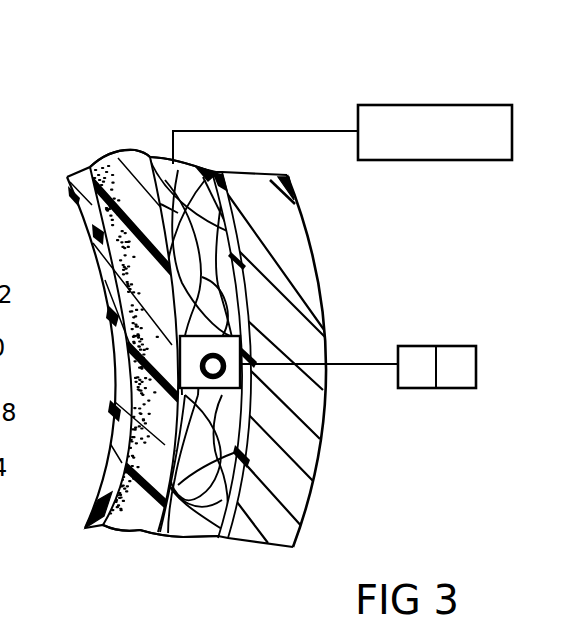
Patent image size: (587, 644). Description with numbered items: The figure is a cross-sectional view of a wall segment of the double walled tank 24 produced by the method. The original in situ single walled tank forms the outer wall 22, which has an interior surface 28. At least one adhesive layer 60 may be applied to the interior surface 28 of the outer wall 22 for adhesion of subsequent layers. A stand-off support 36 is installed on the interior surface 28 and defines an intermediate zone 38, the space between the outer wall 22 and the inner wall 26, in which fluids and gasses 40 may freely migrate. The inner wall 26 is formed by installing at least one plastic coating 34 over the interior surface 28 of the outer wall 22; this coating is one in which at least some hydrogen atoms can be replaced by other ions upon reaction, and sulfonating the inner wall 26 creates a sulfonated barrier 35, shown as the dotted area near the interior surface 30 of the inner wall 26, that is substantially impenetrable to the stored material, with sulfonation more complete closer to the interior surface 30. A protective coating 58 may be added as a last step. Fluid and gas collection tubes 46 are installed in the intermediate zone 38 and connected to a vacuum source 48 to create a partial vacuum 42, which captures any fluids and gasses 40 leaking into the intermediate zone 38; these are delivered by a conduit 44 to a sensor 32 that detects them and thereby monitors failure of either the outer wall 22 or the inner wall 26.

The outer wall 22 is at (288, 530).
The double walled tank 24 is at (412, 432).
The inner wall 26 is at (113, 168).
The interior surface of outer wall 28 is at (252, 398).
The interior surface of inner wall 30 is at (80, 202).
The sensor 32 is at (433, 105).
The plastic coating 34 is at (130, 530).
The sulfonated barrier 35 is at (126, 297).
The stand-off support 36 is at (202, 535).
The intermediate zone 38 is at (176, 532).
The fluids and gasses 40 is at (228, 294).
The partial vacuum 42 is at (192, 177).
The conduit 44 is at (270, 131).
The fluid and gas collection tubes 46 is at (224, 360).
The vacuum source 48 is at (436, 346).
The protective coating 58 is at (88, 526).
The adhesive layer 60 is at (245, 440).